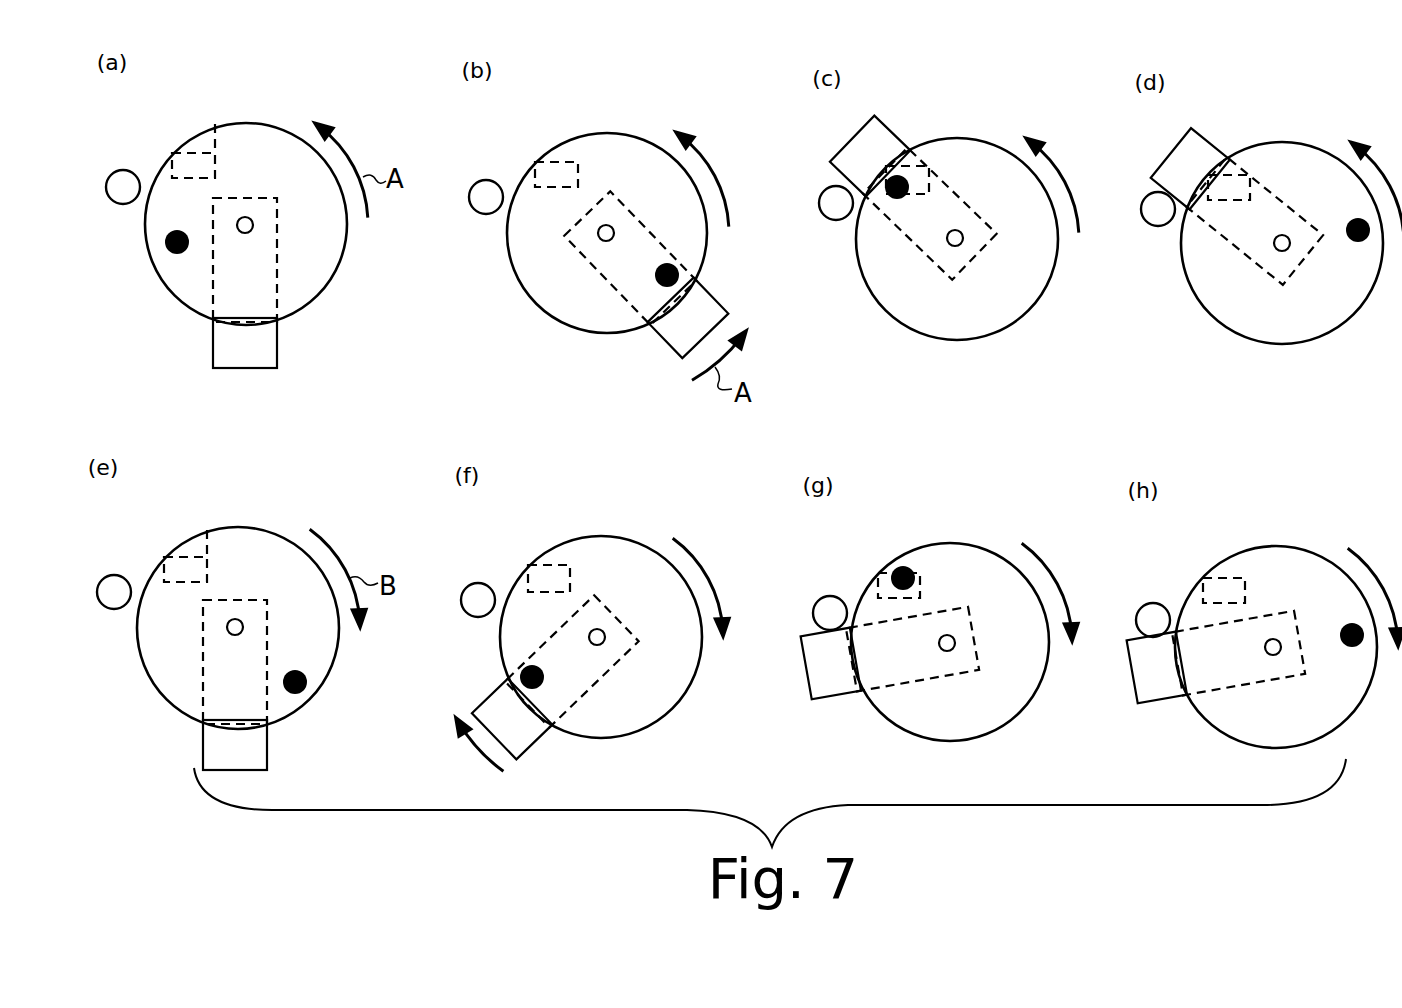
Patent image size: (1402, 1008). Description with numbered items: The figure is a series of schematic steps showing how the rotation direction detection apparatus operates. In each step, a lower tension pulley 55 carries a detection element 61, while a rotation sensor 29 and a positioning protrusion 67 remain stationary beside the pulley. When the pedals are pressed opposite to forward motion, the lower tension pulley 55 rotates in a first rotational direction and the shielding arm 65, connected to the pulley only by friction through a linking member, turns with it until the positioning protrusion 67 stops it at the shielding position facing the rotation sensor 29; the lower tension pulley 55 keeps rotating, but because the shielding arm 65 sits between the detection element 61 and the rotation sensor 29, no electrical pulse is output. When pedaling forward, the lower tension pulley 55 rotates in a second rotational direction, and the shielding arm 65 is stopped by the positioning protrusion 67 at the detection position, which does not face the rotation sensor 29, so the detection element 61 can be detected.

The rotation sensor 29 is at (216, 124).
The lower tension pulley 55 is at (313, 280).
The detection element 61 is at (167, 248).
The shielding arm 65 is at (263, 345).
The positioning protrusion 67 is at (119, 177).